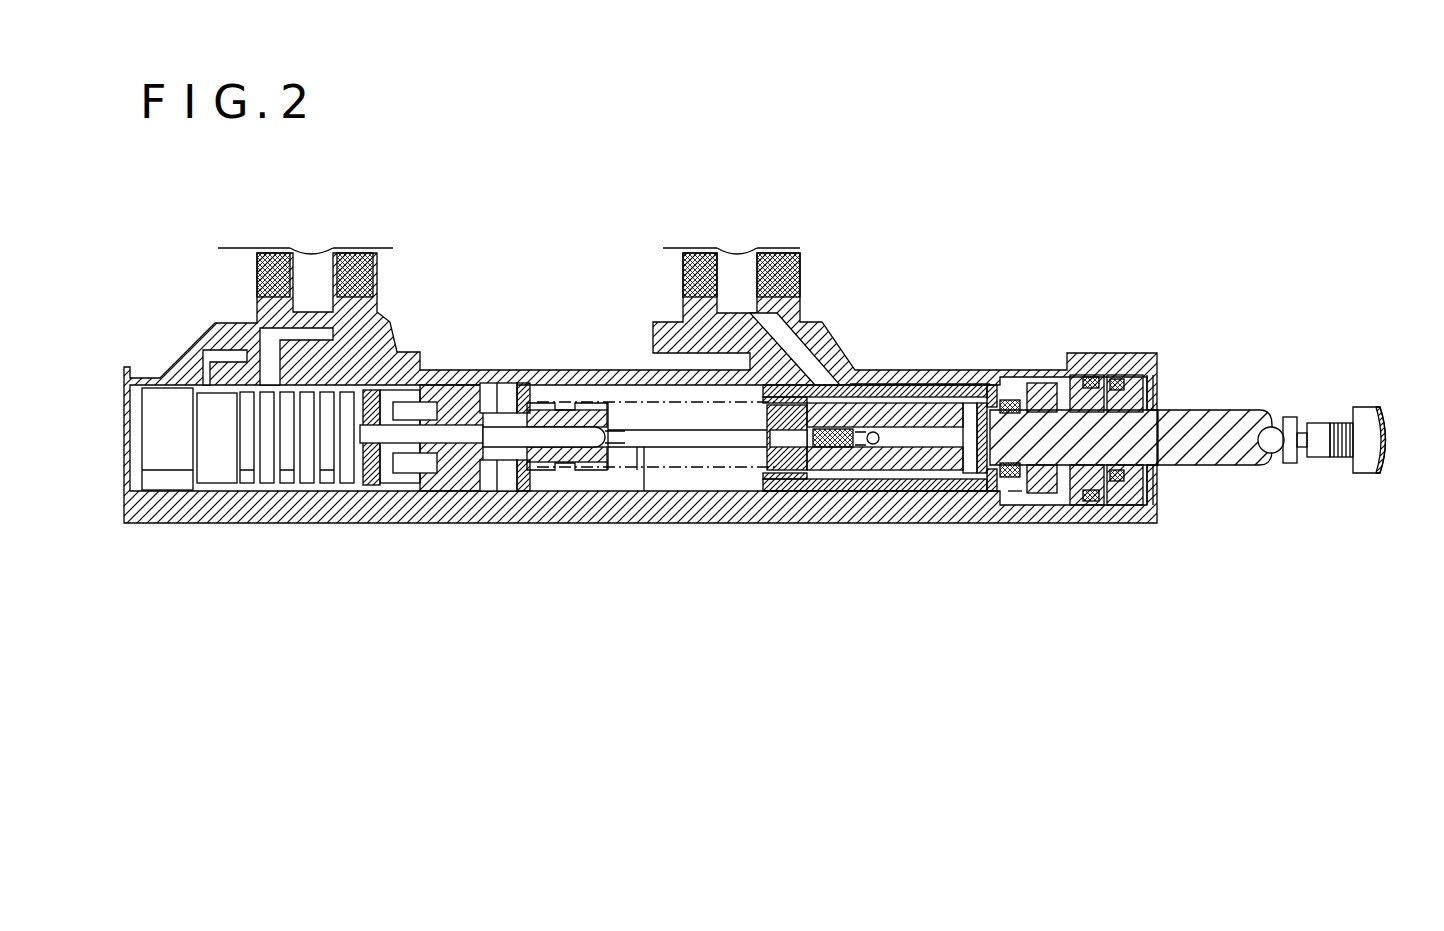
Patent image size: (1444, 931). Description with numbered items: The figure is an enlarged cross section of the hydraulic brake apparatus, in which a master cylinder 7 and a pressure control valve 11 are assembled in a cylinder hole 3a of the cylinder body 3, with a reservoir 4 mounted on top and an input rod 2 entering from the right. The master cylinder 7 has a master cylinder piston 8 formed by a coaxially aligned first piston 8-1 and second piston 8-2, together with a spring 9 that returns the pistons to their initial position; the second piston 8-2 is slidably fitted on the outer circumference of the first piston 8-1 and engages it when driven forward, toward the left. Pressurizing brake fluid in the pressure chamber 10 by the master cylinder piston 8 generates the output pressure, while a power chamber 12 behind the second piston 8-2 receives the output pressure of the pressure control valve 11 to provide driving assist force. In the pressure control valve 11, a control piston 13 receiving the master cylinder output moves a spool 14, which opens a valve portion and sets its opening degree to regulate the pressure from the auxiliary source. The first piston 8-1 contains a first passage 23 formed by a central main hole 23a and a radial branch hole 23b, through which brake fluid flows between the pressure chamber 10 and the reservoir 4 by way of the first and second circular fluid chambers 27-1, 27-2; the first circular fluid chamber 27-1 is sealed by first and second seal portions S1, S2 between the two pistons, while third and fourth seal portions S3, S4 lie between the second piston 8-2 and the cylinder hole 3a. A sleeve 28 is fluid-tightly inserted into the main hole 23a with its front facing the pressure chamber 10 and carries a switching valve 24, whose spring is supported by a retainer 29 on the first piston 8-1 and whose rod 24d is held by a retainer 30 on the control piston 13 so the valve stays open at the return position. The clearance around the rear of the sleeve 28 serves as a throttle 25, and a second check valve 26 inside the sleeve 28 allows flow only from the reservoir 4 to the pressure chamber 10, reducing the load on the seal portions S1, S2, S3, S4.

The input rod 2 is at (1320, 418).
The cylinder body 3 is at (252, 322).
The cylinder hole 3a is at (558, 491).
The reservoir 4 is at (836, 243).
The master cylinder 7 is at (787, 516).
The master cylinder piston 8 is at (1078, 303).
The first piston 8-1 is at (1040, 378).
The second piston 8-2 is at (1055, 378).
The spring 9 is at (683, 500).
The pressure chamber 10 is at (668, 491).
The pressure control valve 11 is at (310, 501).
The power chamber 12 is at (1068, 506).
The control piston 13 is at (527, 385).
The spool 14 is at (388, 497).
The first passage 23 is at (1002, 591).
The main hole 23a is at (940, 491).
The branch hole 23b is at (975, 491).
The switching valve 24 is at (832, 491).
The rod 24d is at (642, 478).
The throttle 25 is at (900, 385).
The second check valve 26 is at (875, 497).
The first circular fluid chamber 27-1 is at (875, 403).
The second circular fluid chamber 27-2 is at (847, 390).
The sleeve 28 is at (760, 358).
The retainer 29 is at (770, 413).
The retainer 30 is at (603, 491).
The first seal portion S1 is at (805, 491).
The second seal portion S2 is at (1015, 493).
The third seal portion S3 is at (772, 491).
The fourth seal portion S4 is at (965, 392).